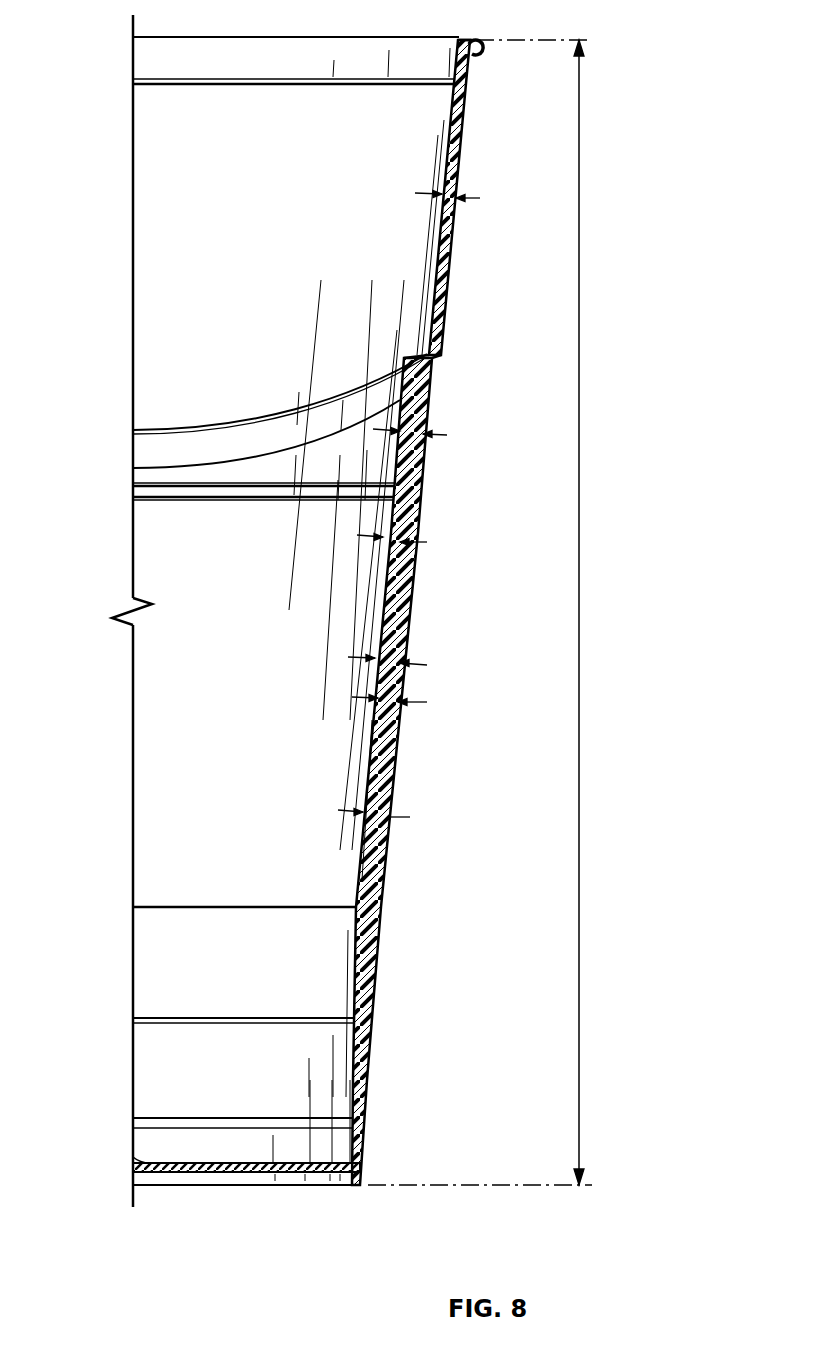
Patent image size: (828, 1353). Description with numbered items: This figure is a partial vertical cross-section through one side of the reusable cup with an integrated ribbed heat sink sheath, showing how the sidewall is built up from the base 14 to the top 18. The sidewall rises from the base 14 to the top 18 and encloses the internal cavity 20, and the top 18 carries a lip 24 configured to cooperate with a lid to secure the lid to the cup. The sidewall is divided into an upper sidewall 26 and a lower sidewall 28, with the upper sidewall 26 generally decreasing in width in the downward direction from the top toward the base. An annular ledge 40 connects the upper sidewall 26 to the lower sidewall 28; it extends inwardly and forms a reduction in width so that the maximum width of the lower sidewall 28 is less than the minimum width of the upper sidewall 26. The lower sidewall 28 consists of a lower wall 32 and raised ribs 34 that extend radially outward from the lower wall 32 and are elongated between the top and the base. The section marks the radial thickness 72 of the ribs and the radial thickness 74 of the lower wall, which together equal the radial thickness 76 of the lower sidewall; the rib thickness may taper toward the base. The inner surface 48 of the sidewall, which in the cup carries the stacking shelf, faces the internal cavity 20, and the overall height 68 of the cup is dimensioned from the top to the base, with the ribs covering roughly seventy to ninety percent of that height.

The base 14 is at (367, 1162).
The top 18 is at (468, 37).
The internal cavity 20 is at (216, 283).
The lip 24 is at (475, 57).
The upper sidewall 26 is at (443, 143).
The lower sidewall 28 is at (362, 867).
The lower wall 32 is at (380, 638).
The raised ribs 34 is at (407, 578).
The annular ledge 40 is at (423, 352).
The inner surface 48 is at (367, 832).
The height of the cup 68 is at (580, 657).
The radial thickness of the ribs 72 is at (440, 437).
The radial thickness of the lower wall 74 is at (413, 543).
The radial thickness of the lower sidewall 76 is at (418, 665).